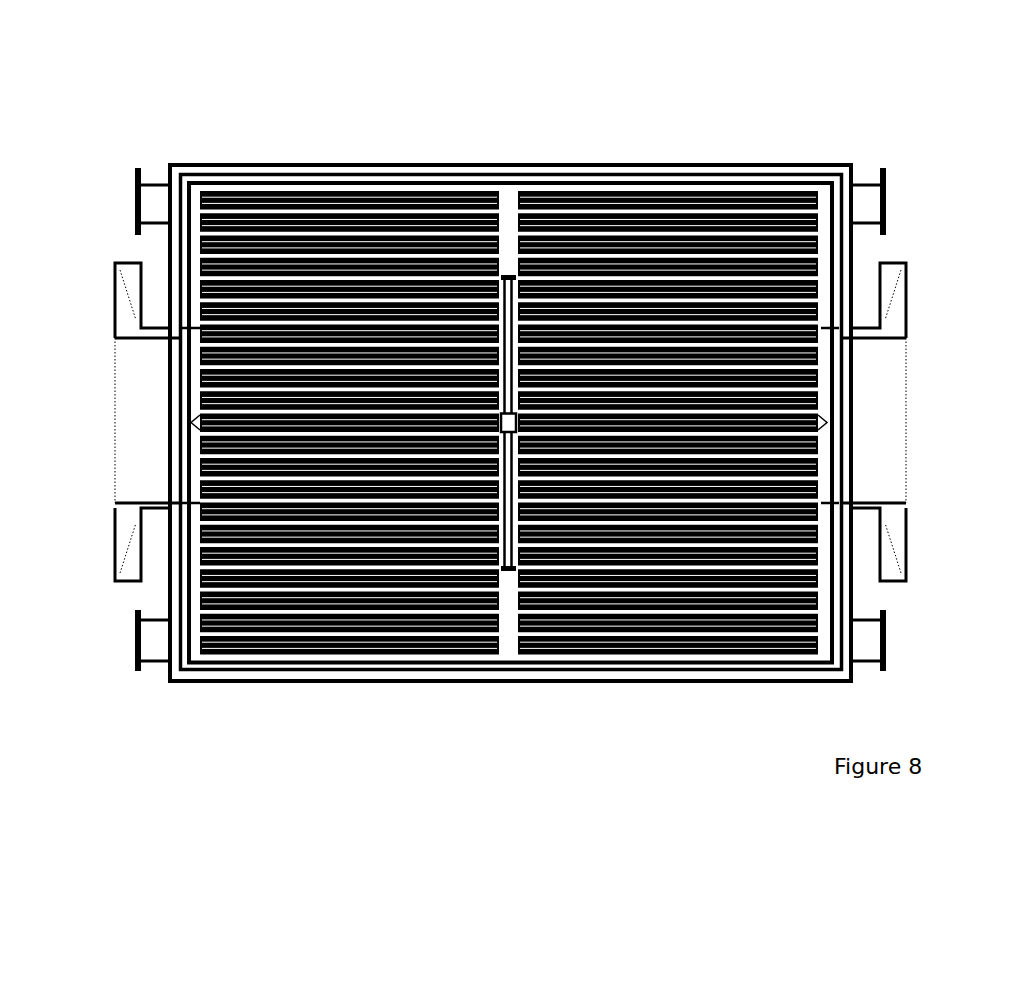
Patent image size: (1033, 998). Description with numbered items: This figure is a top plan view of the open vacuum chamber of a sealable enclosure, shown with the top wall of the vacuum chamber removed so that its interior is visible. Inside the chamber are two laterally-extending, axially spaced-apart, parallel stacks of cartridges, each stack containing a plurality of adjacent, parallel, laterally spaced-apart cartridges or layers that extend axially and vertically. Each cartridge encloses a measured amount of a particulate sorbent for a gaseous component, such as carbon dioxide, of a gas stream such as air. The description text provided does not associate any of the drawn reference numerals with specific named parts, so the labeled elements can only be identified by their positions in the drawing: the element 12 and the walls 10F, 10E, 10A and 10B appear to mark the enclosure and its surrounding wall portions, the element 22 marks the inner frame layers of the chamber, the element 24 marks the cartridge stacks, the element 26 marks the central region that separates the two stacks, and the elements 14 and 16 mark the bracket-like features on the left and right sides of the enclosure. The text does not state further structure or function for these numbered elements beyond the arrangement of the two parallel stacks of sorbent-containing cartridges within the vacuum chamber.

The battery module housing 12 is at (560, 155).
The front wall 10F is at (238, 162).
The rear wall 10E is at (318, 675).
The first side wall 10A is at (150, 594).
The second side wall 10B is at (830, 588).
The inner frame layers 22 is at (298, 178).
The cell array 24 is at (688, 180).
The center channel 26 is at (491, 175).
The left mounting bracket 14 is at (106, 570).
The right mounting bracket 16 is at (880, 570).